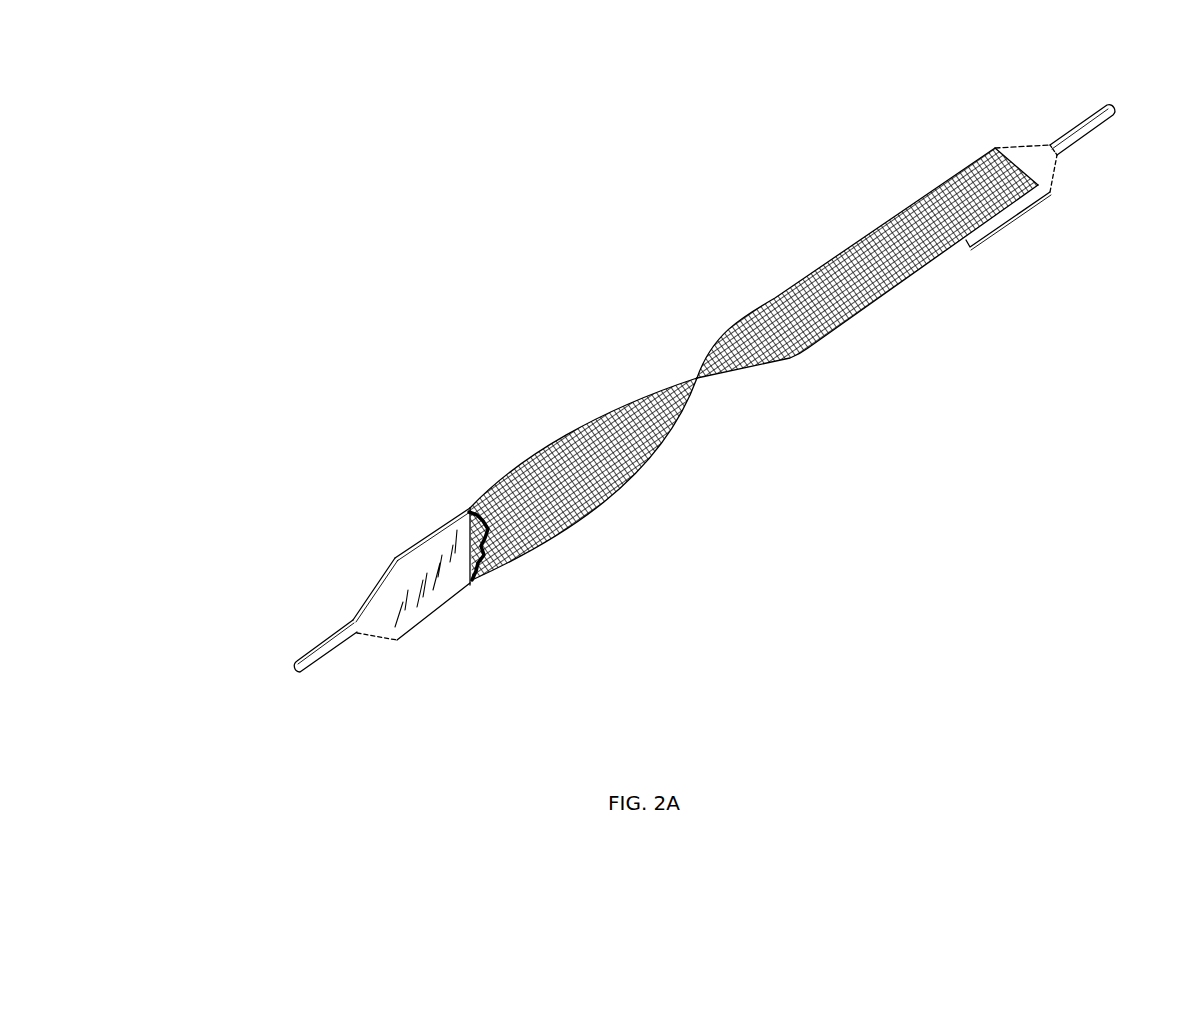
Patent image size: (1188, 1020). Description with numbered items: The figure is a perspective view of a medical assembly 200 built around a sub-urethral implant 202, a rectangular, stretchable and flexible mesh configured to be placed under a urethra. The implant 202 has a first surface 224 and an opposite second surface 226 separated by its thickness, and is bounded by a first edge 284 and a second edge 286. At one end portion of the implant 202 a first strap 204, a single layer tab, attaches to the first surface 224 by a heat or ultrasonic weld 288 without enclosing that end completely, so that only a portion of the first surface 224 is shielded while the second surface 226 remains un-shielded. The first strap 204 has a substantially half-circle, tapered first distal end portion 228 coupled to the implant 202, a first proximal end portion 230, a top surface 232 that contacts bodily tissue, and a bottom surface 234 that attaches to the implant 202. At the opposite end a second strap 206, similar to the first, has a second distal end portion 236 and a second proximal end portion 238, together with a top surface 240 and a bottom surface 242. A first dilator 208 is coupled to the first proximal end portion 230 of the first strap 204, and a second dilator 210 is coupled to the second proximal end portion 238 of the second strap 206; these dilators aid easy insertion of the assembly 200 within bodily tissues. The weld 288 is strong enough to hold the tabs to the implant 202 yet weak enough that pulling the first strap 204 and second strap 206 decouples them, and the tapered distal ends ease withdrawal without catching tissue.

The medical assembly 200 is at (167, 150).
The sub-urethral implant 202 is at (857, 297).
The first strap 204 is at (433, 610).
The second strap 206 is at (1030, 210).
The first dilator 208 is at (320, 660).
The second dilator 210 is at (1105, 123).
The first surface 224 is at (505, 550).
The second surface 226 is at (760, 333).
The first distal end portion 228 is at (445, 524).
The first proximal end portion 230 is at (368, 607).
The top surface 232 is at (395, 637).
The bottom surface 234 is at (395, 558).
The second distal end portion 236 is at (982, 235).
The second proximal end portion 238 is at (1057, 160).
The top surface 240 is at (457, 587).
The bottom surface 242 is at (1030, 158).
The first edge 284 is at (620, 410).
The second edge 286 is at (777, 357).
The heat or ultrasonic weld 288 is at (490, 528).